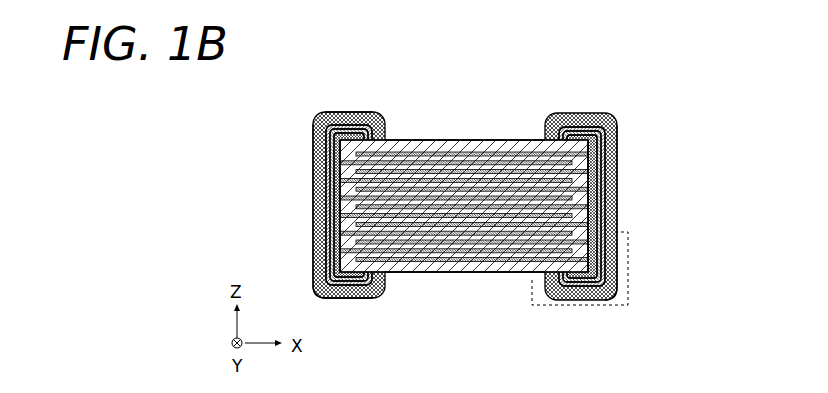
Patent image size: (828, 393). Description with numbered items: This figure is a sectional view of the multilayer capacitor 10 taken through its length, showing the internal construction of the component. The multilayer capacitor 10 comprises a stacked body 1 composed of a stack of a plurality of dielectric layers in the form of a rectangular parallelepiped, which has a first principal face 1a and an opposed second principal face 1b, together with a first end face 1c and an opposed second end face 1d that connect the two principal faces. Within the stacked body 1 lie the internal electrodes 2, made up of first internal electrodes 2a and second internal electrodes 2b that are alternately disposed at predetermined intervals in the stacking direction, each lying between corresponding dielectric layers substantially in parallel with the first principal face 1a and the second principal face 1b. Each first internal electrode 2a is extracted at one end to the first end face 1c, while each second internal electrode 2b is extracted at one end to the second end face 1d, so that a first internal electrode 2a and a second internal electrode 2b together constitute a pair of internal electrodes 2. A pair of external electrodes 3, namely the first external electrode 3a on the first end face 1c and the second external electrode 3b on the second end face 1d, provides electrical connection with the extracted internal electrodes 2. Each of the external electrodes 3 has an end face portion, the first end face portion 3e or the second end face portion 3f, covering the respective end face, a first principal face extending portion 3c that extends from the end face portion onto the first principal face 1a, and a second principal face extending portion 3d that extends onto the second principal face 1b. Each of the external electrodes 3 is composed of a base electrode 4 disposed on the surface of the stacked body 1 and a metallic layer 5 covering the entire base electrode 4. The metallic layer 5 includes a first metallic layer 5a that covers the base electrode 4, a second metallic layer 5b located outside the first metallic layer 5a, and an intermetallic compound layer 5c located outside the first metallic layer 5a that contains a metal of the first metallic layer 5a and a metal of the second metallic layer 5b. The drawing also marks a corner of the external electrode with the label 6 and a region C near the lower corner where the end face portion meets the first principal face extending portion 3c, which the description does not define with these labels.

The multilayer capacitor 10 is at (469, 73).
The stacked body 1 is at (462, 138).
The first principal face 1a is at (430, 272).
The second principal face 1b is at (438, 140).
The first end face 1c is at (316, 234).
The second end face 1d is at (605, 190).
The internal electrodes 2 is at (263, 106).
The first internal electrode 2a is at (327, 123).
The second internal electrode 2b is at (318, 140).
The external electrodes 3 is at (663, 37).
The first external electrode 3a is at (313, 185).
The second external electrode 3b is at (618, 168).
The first principal face extending portion 3c is at (355, 297).
The second principal face extending portion 3d is at (352, 110).
The first end face portion 3e is at (313, 213).
The second end face portion 3f is at (618, 216).
The base electrode 4 is at (612, 118).
The metallic layer 5 is at (637, 70).
The first metallic layer 5a is at (604, 113).
The second metallic layer 5b is at (582, 113).
The intermetallic compound layer 5c is at (552, 113).
The corner portion 6 is at (323, 292).
The corner region C is at (630, 268).